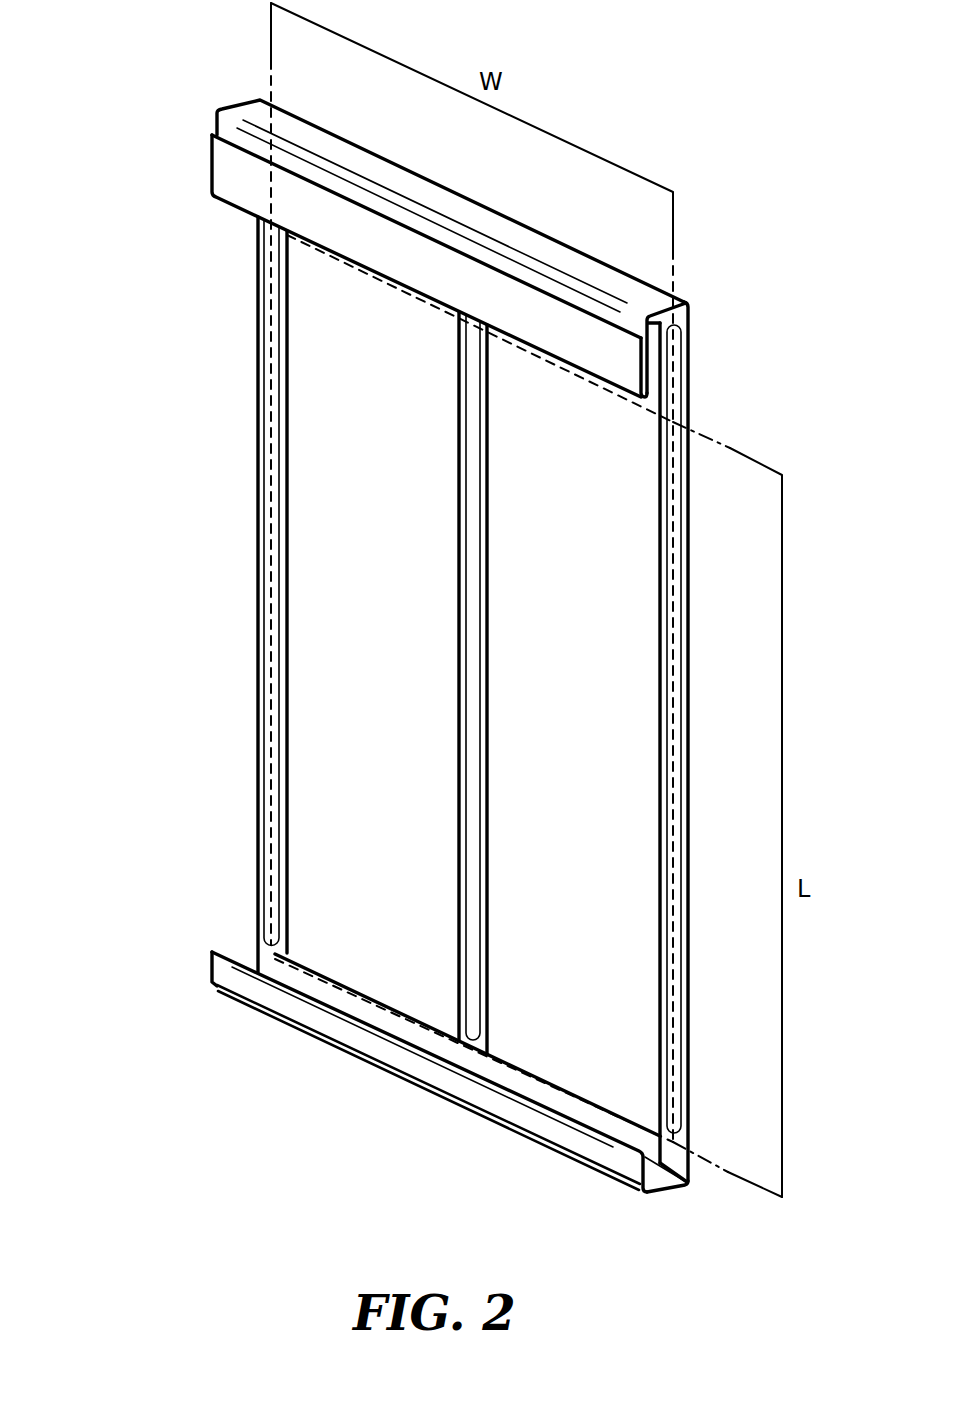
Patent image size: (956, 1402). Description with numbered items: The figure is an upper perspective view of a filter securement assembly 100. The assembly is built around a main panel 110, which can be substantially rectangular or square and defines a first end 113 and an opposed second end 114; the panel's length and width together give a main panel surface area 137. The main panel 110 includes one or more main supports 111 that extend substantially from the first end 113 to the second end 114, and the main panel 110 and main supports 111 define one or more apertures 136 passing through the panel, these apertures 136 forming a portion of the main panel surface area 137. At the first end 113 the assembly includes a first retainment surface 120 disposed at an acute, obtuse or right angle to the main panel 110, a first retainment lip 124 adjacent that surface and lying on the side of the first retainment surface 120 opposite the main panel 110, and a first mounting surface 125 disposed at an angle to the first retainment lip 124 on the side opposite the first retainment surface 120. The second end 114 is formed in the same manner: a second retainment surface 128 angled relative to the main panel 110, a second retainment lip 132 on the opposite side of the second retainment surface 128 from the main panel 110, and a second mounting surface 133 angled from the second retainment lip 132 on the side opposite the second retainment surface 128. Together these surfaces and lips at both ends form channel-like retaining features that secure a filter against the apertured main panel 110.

The filter securement assembly 100 is at (158, 563).
The main panel 110 is at (683, 618).
The main supports 111 is at (660, 915).
The first end 113 is at (705, 318).
The second end 114 is at (713, 1186).
The first retainment surface 120 is at (660, 303).
The first retainment lip 124 is at (648, 372).
The first mounting surface 125 is at (555, 320).
The second retainment surface 128 is at (668, 1190).
The second retainment lip 132 is at (660, 1182).
The second mounting surface 133 is at (622, 1163).
The apertures 136 is at (432, 680).
The main panel surface area 137 is at (272, 437).